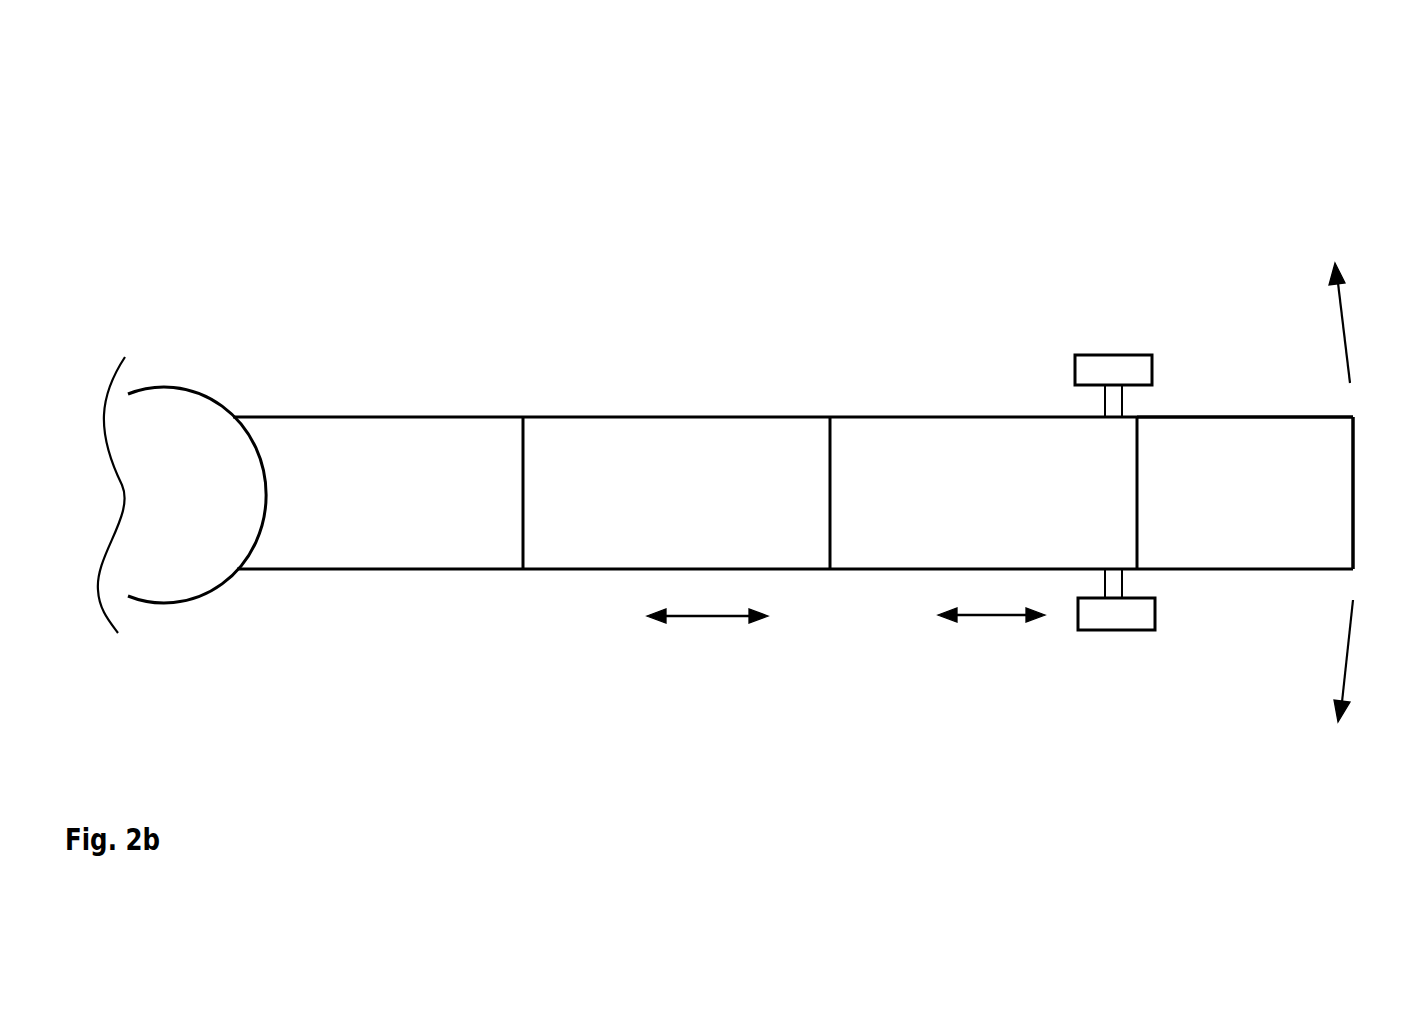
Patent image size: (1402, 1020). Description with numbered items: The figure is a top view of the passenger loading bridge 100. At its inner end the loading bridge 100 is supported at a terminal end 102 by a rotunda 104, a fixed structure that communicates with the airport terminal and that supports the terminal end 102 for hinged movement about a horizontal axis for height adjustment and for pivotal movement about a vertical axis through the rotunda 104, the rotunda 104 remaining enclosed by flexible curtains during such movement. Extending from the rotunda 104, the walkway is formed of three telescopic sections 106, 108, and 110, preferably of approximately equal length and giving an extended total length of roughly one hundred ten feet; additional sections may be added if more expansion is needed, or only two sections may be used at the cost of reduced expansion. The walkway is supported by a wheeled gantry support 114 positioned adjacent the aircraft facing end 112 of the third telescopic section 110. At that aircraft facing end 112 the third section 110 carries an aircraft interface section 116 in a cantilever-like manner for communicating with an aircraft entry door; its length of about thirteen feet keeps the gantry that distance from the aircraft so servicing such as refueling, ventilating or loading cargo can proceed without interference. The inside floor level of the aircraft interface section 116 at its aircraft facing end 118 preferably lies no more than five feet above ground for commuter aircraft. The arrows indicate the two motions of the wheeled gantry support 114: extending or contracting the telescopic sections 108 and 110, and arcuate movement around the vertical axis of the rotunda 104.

The loading bridge 100 is at (793, 320).
The terminal end 102 is at (265, 492).
The rotunda 104 is at (212, 397).
The first telescopic section 106 is at (400, 493).
The second telescopic section 108 is at (661, 493).
The third telescopic section 110 is at (982, 493).
The aircraft facing end 112 is at (1138, 483).
The wheeled gantry support 114 is at (1122, 578).
The aircraft interface section 116 is at (1275, 492).
The aircraft facing end 118 is at (1353, 473).